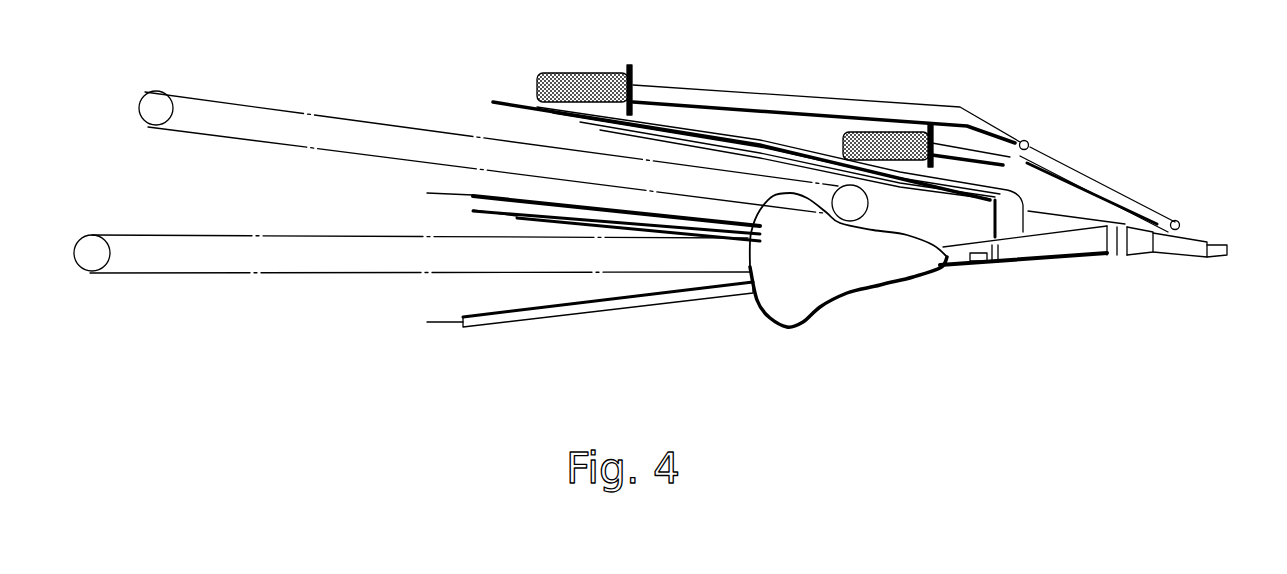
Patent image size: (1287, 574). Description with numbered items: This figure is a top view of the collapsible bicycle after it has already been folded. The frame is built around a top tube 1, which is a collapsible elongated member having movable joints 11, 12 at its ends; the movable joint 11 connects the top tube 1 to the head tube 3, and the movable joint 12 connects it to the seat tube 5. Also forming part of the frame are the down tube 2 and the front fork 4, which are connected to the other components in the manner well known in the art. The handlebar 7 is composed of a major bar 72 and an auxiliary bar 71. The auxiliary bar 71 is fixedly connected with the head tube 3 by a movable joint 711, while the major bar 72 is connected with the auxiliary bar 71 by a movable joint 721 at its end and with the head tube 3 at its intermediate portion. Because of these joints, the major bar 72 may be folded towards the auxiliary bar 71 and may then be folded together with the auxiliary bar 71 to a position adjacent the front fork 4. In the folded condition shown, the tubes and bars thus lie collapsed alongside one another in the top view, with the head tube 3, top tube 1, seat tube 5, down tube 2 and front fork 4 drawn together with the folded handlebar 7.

The top tube 1 is at (1065, 267).
The movable joint 11 is at (980, 265).
The movable joint 12 is at (1148, 250).
The down tube 2 is at (1057, 233).
The head tube 3 is at (1120, 218).
The front fork 4 is at (717, 145).
The seat tube 5 is at (667, 307).
The handlebar 7 is at (953, 105).
The auxiliary bar 71 is at (1083, 178).
The movable joint 711 is at (1180, 222).
The major bar 72 is at (832, 100).
The movable joint 721 is at (1029, 140).